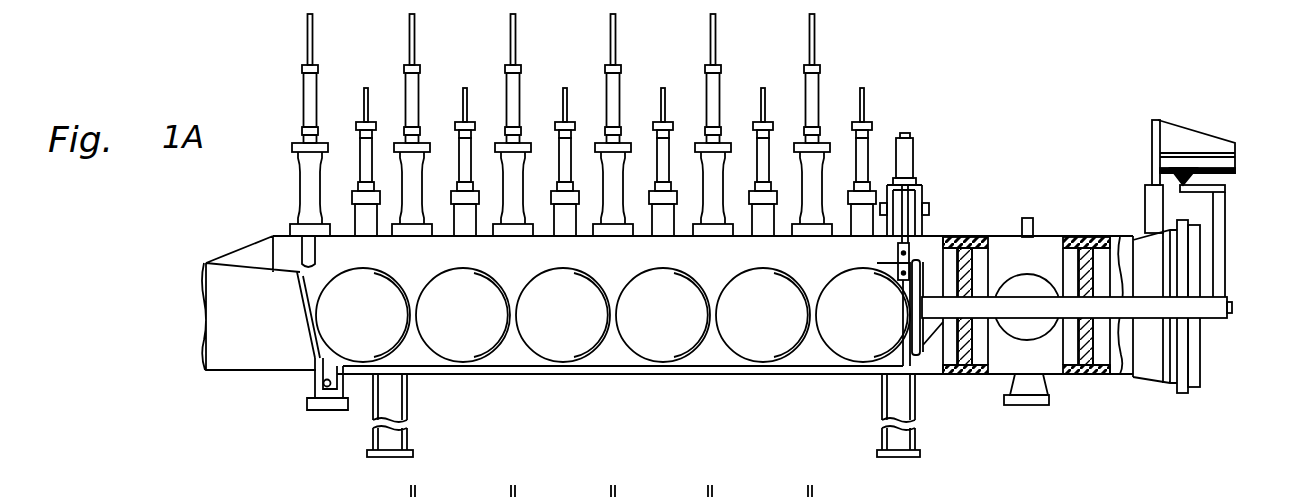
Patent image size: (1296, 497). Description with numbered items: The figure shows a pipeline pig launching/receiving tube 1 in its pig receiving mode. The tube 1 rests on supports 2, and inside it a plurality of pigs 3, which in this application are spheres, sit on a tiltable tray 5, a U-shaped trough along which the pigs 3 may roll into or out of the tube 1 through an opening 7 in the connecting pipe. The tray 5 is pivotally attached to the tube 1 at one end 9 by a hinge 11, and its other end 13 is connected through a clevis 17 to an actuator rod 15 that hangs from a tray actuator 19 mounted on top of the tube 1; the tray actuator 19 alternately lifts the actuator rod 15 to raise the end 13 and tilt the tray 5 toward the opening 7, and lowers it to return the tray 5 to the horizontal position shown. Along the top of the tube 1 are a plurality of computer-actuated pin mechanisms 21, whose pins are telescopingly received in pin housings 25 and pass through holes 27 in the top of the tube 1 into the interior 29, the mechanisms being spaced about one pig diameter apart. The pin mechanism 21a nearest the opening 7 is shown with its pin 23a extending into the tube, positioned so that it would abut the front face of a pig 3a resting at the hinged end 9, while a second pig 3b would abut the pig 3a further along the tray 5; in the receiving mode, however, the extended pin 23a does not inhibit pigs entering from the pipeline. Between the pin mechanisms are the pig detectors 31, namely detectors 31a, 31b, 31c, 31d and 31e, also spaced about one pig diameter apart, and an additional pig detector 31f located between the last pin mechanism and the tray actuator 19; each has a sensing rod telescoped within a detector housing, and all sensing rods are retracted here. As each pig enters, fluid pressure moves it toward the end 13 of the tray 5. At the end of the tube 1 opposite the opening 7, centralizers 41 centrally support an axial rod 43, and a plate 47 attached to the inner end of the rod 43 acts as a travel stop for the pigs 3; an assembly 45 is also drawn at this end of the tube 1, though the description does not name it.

The pig launching/receiving tube 1 is at (667, 323).
The supports 2 is at (407, 410).
The pigs 3 is at (613, 348).
The pig 3a is at (376, 343).
The second pig 3b is at (476, 343).
The tiltable tray 5 is at (612, 362).
The opening 7 is at (251, 248).
The end 9 is at (317, 357).
The hinge 11 is at (322, 383).
The end 13 is at (913, 362).
The actuator rod 15 is at (905, 204).
The clevis 17 is at (898, 252).
The tray actuator 19 is at (907, 133).
The computer-actuated pin mechanisms 21 is at (277, 119).
The pin mechanism 21a is at (275, 122).
The pin 23a is at (318, 253).
The pin housings 25 is at (276, 177).
The holes 27 is at (300, 238).
The interior 29 is at (530, 266).
The pig detectors 31 is at (305, 133).
The pig detector 31a is at (301, 162).
The pig detector 31b is at (450, 152).
The pig detector 31c is at (550, 152).
The pig detector 31d is at (648, 152).
The pig detector 31e is at (748, 152).
The additional pig detector 31f is at (848, 150).
The centralizers 41 is at (1077, 342).
The axial rod 43 is at (1027, 305).
The feed hopper 45 is at (1234, 183).
The plate 47 is at (921, 262).